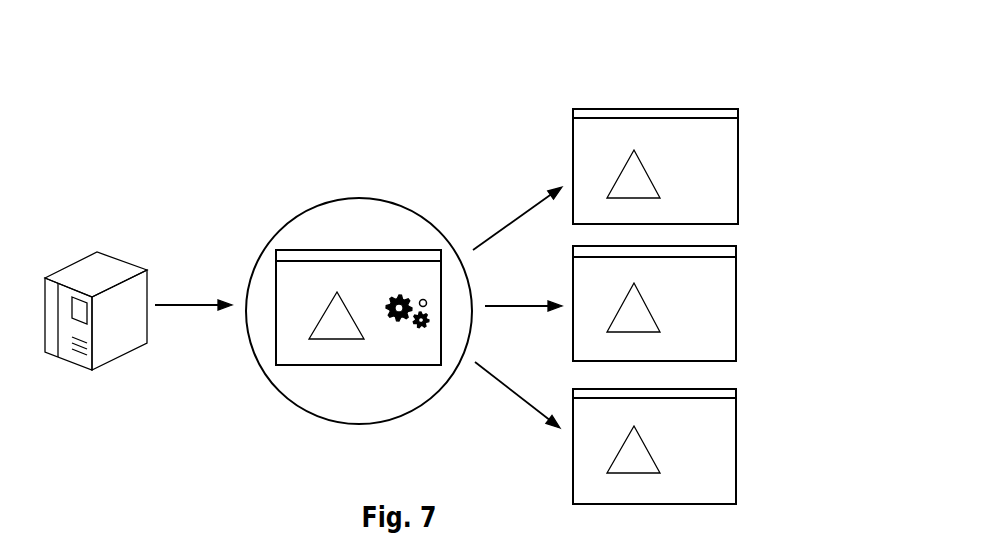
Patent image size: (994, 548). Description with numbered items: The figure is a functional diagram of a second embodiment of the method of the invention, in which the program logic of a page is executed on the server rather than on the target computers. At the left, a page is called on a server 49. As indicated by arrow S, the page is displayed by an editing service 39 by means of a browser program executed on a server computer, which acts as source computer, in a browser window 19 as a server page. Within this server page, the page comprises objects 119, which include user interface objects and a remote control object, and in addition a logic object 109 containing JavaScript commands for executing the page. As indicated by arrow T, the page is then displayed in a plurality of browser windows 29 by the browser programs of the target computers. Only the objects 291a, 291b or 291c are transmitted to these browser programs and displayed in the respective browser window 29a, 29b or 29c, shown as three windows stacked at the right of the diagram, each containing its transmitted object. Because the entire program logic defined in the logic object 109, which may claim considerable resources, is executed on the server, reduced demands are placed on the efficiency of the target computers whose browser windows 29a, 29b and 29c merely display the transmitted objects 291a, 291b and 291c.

The server 49 is at (107, 266).
The arrow S is at (185, 298).
The editing service 39 is at (250, 272).
The browser window 19 is at (306, 228).
The objects 119 is at (342, 320).
The logic object 109 is at (403, 298).
The arrow T is at (492, 198).
The browser windows 29 is at (695, 90).
The browser window 29a is at (573, 117).
The objects 291a is at (630, 178).
The browser window 29b is at (712, 288).
The objects 291b is at (647, 320).
The browser window 29c is at (712, 433).
The objects 291c is at (647, 465).